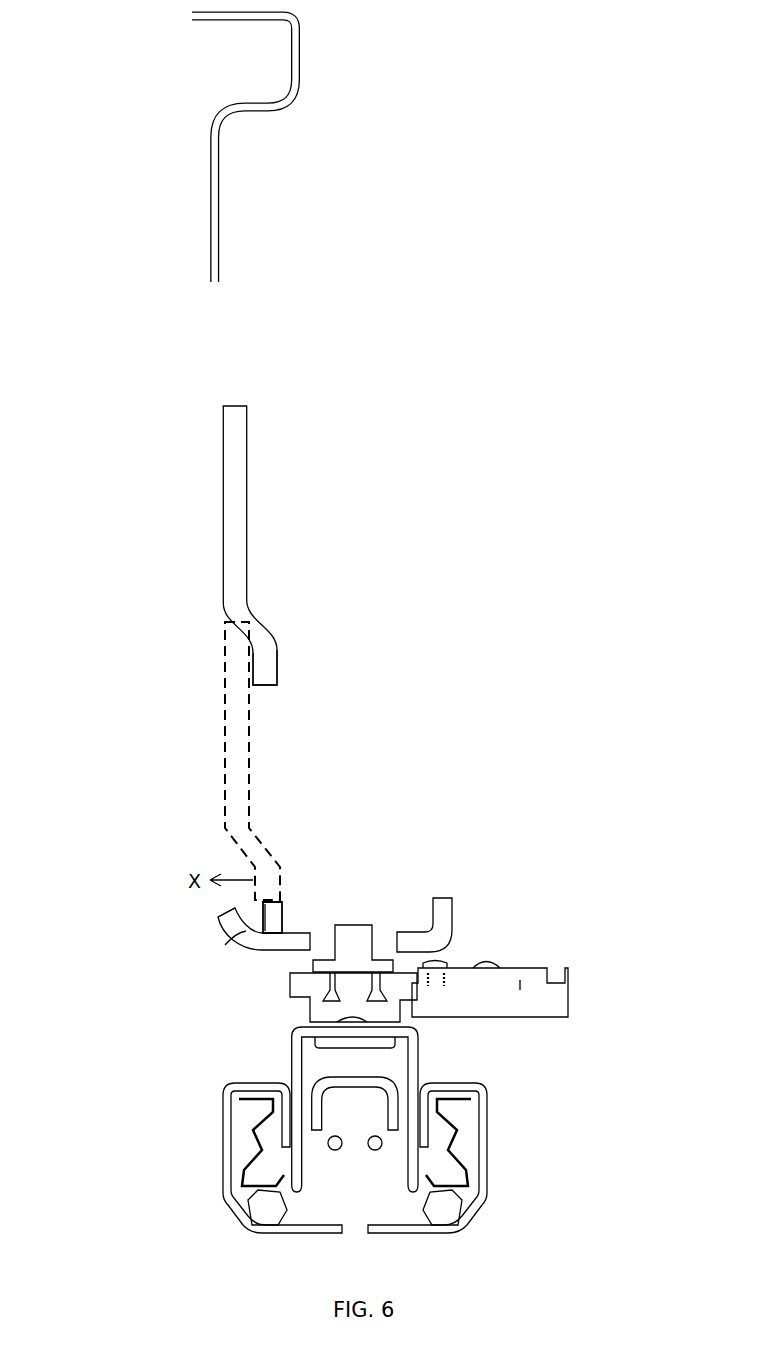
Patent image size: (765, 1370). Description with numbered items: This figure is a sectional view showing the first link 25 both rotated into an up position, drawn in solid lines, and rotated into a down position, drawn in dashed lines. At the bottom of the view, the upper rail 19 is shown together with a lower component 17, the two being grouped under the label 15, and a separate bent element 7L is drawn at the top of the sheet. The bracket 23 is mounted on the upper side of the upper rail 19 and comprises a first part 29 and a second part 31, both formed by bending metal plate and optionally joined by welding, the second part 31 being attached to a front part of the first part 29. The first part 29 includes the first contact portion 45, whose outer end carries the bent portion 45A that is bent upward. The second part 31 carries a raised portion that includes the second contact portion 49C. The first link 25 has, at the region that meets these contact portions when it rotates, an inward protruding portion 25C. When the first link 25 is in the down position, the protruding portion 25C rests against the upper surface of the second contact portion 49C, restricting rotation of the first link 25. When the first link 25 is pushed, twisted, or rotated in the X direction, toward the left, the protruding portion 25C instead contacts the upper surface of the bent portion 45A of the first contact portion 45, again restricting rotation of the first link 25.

The left side frame member 7L is at (299, 88).
The first link 25 is at (235, 503).
The protruding portion 25C is at (278, 658).
The second contact portion 49C is at (280, 913).
The second part 31 is at (280, 927).
The first contact portion 45 is at (258, 947).
The bent portion 45A is at (230, 915).
The first part 29 is at (217, 942).
The bracket 23 is at (442, 898).
The slide rail (left) 15 is at (272, 1130).
The upper rail 19 is at (291, 1055).
The lower rail 17 is at (225, 1112).